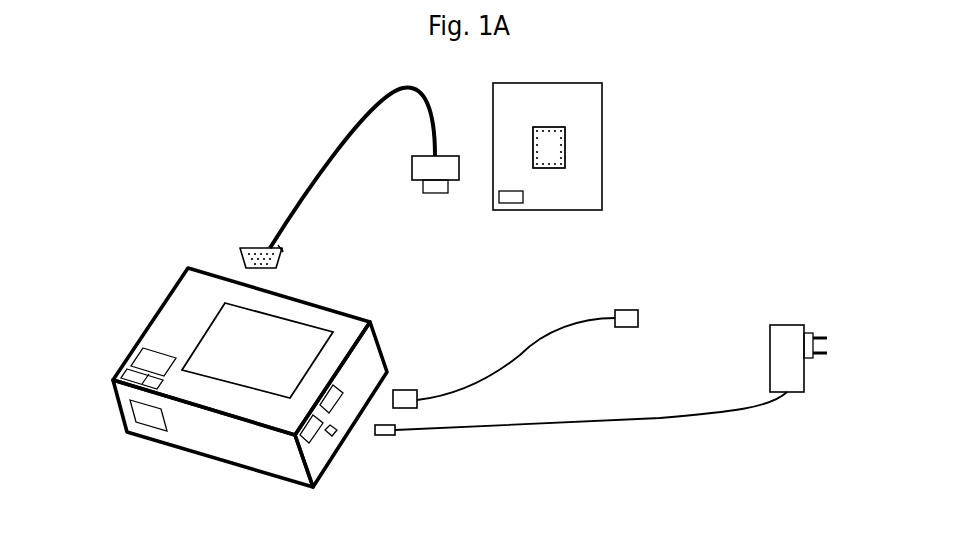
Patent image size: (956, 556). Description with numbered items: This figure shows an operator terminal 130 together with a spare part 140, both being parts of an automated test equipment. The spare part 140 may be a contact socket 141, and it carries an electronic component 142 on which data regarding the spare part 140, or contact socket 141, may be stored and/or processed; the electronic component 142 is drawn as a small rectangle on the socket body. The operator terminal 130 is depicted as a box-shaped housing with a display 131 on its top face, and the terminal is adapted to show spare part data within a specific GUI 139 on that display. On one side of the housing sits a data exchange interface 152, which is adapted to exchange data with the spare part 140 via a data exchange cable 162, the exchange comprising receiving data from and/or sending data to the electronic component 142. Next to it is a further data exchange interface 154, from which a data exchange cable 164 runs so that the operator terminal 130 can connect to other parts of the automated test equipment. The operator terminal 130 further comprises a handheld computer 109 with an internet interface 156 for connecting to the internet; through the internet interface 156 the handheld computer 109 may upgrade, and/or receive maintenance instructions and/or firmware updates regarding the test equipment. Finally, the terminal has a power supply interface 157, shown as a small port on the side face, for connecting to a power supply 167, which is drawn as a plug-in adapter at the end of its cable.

The handheld computer 109 is at (135, 348).
The operator terminal 130 is at (157, 313).
The display 131 is at (272, 313).
The GUI 139 is at (289, 341).
The spare part 140 is at (602, 135).
The contact socket 141 is at (549, 147).
The electronic component 142 is at (512, 203).
The data exchange interface 152 is at (317, 432).
The data exchange interface 154 is at (330, 398).
The internet interface 156 is at (147, 413).
The power supply interface 157 is at (337, 432).
The data exchange cable 162 is at (320, 160).
The data exchange cable 164 is at (530, 345).
The power supply 167 is at (663, 417).